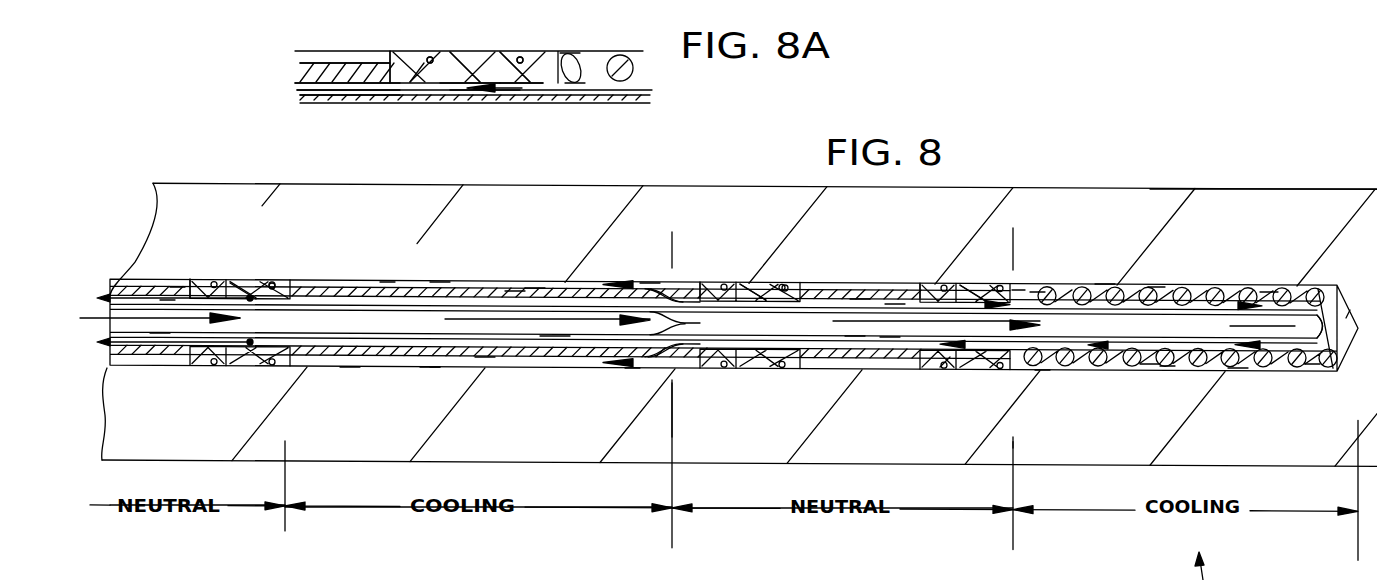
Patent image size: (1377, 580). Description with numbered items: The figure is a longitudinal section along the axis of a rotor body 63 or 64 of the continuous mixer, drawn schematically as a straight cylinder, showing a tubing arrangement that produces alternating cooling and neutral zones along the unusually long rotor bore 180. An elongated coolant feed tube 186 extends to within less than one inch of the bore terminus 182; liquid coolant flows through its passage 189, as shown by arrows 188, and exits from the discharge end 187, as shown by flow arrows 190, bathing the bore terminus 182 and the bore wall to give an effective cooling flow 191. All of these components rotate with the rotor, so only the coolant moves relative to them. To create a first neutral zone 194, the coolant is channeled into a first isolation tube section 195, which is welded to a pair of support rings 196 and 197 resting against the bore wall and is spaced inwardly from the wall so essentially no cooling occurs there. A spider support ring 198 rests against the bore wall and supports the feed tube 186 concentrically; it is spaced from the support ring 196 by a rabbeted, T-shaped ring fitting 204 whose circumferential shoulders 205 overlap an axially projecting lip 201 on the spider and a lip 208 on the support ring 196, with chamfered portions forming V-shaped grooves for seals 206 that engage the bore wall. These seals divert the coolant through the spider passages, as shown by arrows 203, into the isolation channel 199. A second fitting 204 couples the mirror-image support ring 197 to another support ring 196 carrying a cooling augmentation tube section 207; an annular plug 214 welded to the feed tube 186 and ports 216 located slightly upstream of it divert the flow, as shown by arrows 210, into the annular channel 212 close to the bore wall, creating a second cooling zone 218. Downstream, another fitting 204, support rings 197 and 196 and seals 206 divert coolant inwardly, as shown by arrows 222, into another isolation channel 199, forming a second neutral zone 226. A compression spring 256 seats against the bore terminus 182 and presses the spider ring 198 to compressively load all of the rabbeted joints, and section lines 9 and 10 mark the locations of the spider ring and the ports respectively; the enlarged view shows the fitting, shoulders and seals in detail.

In FIG. 8A, the rotor bore 180 is at (297, 82).
In FIG. 8, the rotor bore 180 is at (441, 285).
In FIG. 8, the bore terminus 182 is at (1347, 305).
In FIG. 8A, the coolant feed tube 186 is at (338, 97).
In FIG. 8, the coolant feed tube 186 is at (893, 303).
In FIG. 8, the discharge end 187 is at (1310, 338).
In FIG. 8, the coolant flow arrows 188 is at (157, 338).
In FIG. 8, the passage 189 is at (853, 333).
In FIG. 8, the flow arrows 190 is at (1268, 290).
In FIG. 8, the cooling flow 191 is at (1153, 285).
In FIG. 8, the first neutral zone 194 is at (868, 531).
In FIG. 8A, the isolation tube section 195 is at (345, 63).
In FIG. 8, the isolation tube section 195 is at (175, 287).
In FIG. 8A, the support ring 196 is at (403, 51).
In FIG. 8, the support ring 196 is at (204, 283).
In FIG. 8, the support ring 197 is at (282, 279).
In FIG. 8A, the spider support ring 198 is at (550, 53).
In FIG. 8, the spider support ring 198 is at (1018, 290).
In FIG. 8A, the isolation channel 199 is at (358, 88).
In FIG. 8, the isolation channel 199 is at (162, 302).
In FIG. 8A, the axially projecting lip 201 is at (521, 104).
In FIG. 8A, the flow arrows 203 is at (483, 97).
In FIG. 8, the flow arrows 203 is at (1035, 290).
In FIG. 8A, the rabbeted ring fitting 204 is at (474, 56).
In FIG. 8, the rabbeted ring fitting 204 is at (238, 282).
In FIG. 8A, the circumferential shoulder 205 is at (450, 58).
In FIG. 8A, the seal 206 is at (517, 63).
In FIG. 8, the seal 206 is at (947, 367).
In FIG. 8, the cooling augmentation tube section 207 is at (513, 291).
In FIG. 8A, the axially projecting lip 208 is at (450, 90).
In FIG. 8, the coolant flow arrows 210 is at (352, 367).
In FIG. 8, the annular channel 212 is at (532, 286).
In FIG. 8, the annular plug 214 is at (680, 323).
In FIG. 8, the ports 216 is at (680, 287).
In FIG. 8, the second rotor cooling zone 218 is at (526, 534).
In FIG. 8, the flow arrows 222 is at (107, 297).
In FIG. 8, the second neutral zone 226 is at (186, 541).
In FIG. 8, the compression spring 256 is at (1238, 370).
In FIG. 8, the section line 9- 9 is at (1013, 228).
In FIG. 8, the section line 10- 10 is at (672, 232).
In FIG. 8, the first rotor body 63 is at (1233, 152).
In FIG. 8, the second rotor body 64 is at (1205, 137).